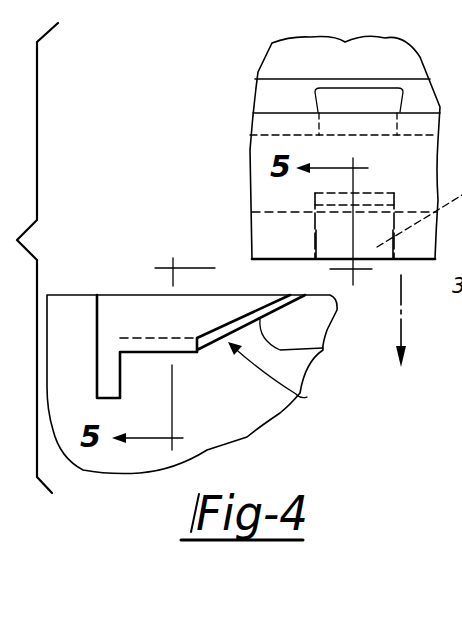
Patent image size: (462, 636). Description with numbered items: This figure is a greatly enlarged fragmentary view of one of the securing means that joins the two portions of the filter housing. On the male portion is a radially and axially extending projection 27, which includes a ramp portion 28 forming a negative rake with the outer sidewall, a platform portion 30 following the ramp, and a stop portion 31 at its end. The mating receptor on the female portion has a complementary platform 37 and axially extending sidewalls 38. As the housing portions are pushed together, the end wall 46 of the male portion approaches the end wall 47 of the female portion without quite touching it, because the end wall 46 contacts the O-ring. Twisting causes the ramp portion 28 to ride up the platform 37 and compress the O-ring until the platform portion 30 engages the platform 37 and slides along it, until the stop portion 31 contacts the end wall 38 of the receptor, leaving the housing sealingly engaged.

The radially and axially extending projection 27 is at (283, 376).
The ramp portion 28 is at (323, 348).
The platform portion 30 is at (187, 355).
The stop portion 31 is at (100, 381).
The platform 37 is at (315, 193).
The axially extending sidewall 38 is at (392, 225).
The end wall of the male portion 46 is at (98, 295).
The end wall of the female portion 47 is at (275, 135).